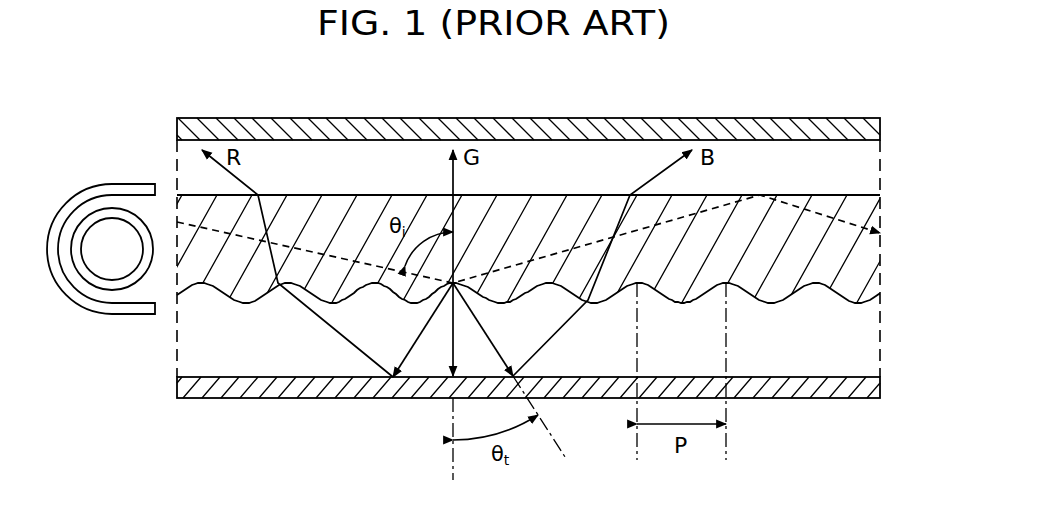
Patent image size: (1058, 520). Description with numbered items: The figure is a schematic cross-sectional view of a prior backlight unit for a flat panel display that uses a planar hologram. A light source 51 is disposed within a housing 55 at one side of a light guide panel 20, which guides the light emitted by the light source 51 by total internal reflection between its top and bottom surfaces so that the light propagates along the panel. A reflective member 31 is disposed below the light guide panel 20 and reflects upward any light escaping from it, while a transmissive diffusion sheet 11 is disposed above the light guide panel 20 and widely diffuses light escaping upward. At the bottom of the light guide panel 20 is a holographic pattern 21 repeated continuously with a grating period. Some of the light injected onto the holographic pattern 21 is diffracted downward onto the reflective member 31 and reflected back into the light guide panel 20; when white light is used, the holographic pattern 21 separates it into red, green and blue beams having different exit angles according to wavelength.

The transmissive diffusion sheet 11 is at (868, 126).
The light guide panel 20 is at (868, 259).
The holographic pattern 21 is at (866, 301).
The reflective member 31 is at (868, 390).
The light source 51 is at (113, 215).
The housing 55 is at (113, 310).